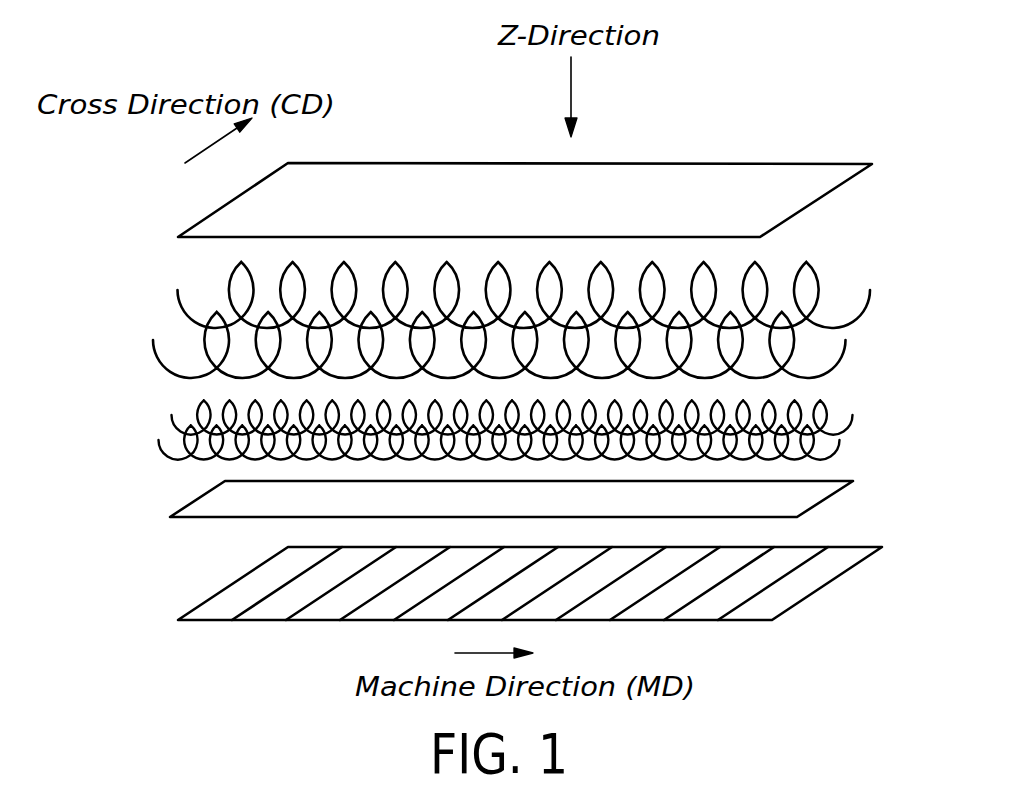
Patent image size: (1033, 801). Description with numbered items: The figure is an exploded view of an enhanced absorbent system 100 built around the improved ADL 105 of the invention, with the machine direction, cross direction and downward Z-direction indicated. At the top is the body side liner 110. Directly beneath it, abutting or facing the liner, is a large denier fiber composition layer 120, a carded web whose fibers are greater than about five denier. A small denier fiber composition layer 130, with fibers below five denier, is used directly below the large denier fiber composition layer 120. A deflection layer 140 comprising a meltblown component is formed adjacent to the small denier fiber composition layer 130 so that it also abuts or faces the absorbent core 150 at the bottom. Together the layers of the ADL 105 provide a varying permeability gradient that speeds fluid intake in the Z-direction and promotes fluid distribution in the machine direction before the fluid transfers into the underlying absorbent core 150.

The enhanced absorbent system 100 is at (696, 120).
The ADL 105 is at (867, 241).
The body side liner 110 is at (178, 233).
The large denier fiber composition layer 120 is at (182, 312).
The small denier fiber composition layer 130 is at (173, 423).
The deflection layer 140 is at (180, 507).
The absorbent core 150 is at (180, 617).